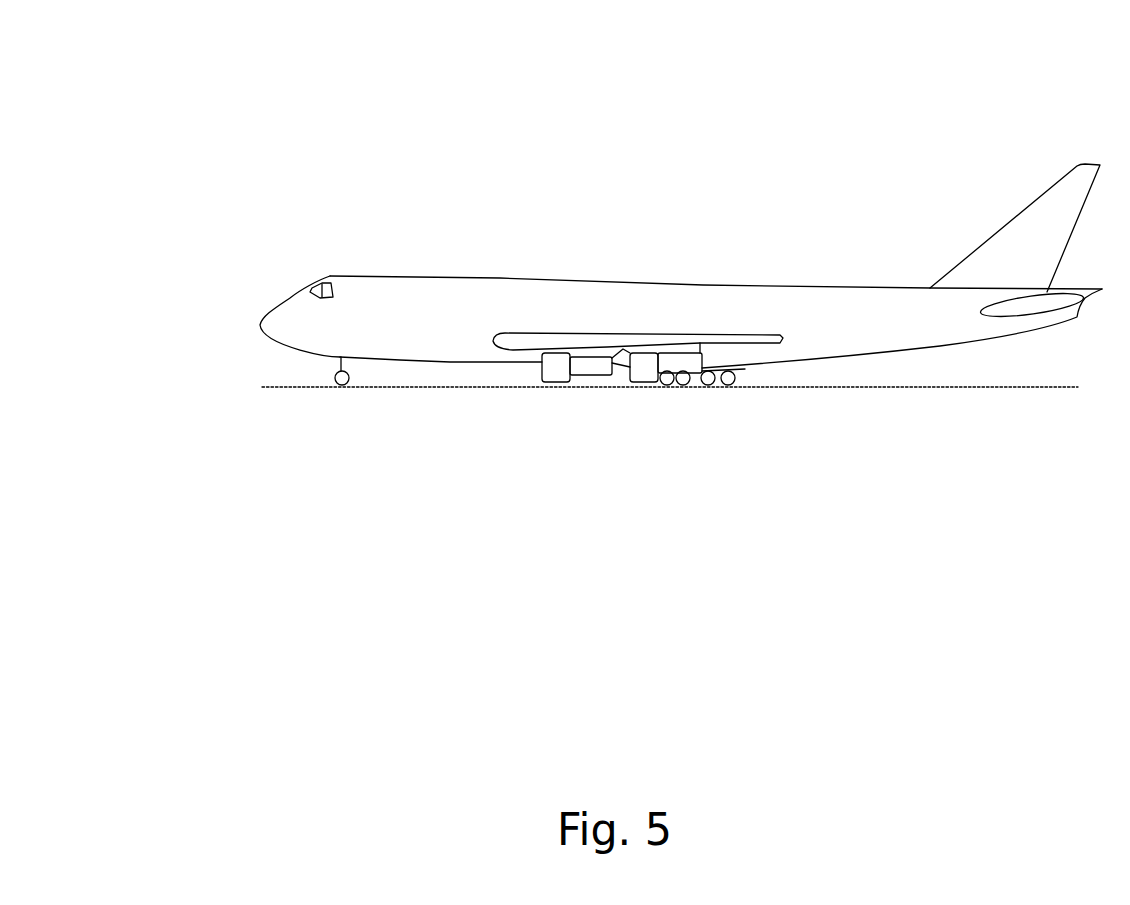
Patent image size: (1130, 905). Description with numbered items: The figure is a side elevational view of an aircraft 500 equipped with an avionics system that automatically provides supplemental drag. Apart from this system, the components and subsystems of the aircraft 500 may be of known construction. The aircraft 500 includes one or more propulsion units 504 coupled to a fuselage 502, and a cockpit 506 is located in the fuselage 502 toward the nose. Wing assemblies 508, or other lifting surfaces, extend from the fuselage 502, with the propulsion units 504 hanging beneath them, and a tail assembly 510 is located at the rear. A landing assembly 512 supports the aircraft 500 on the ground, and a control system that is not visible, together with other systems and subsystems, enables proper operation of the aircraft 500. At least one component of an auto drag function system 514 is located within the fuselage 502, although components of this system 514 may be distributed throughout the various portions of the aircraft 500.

The aircraft 500 is at (362, 71).
The fuselage 502 is at (703, 285).
The propulsion units 504 is at (555, 363).
The cockpit 506 is at (312, 282).
The wing assemblies 508 is at (523, 337).
The tail assembly 510 is at (1012, 240).
The landing assembly 512 is at (684, 377).
The auto drag function system 514 is at (338, 290).